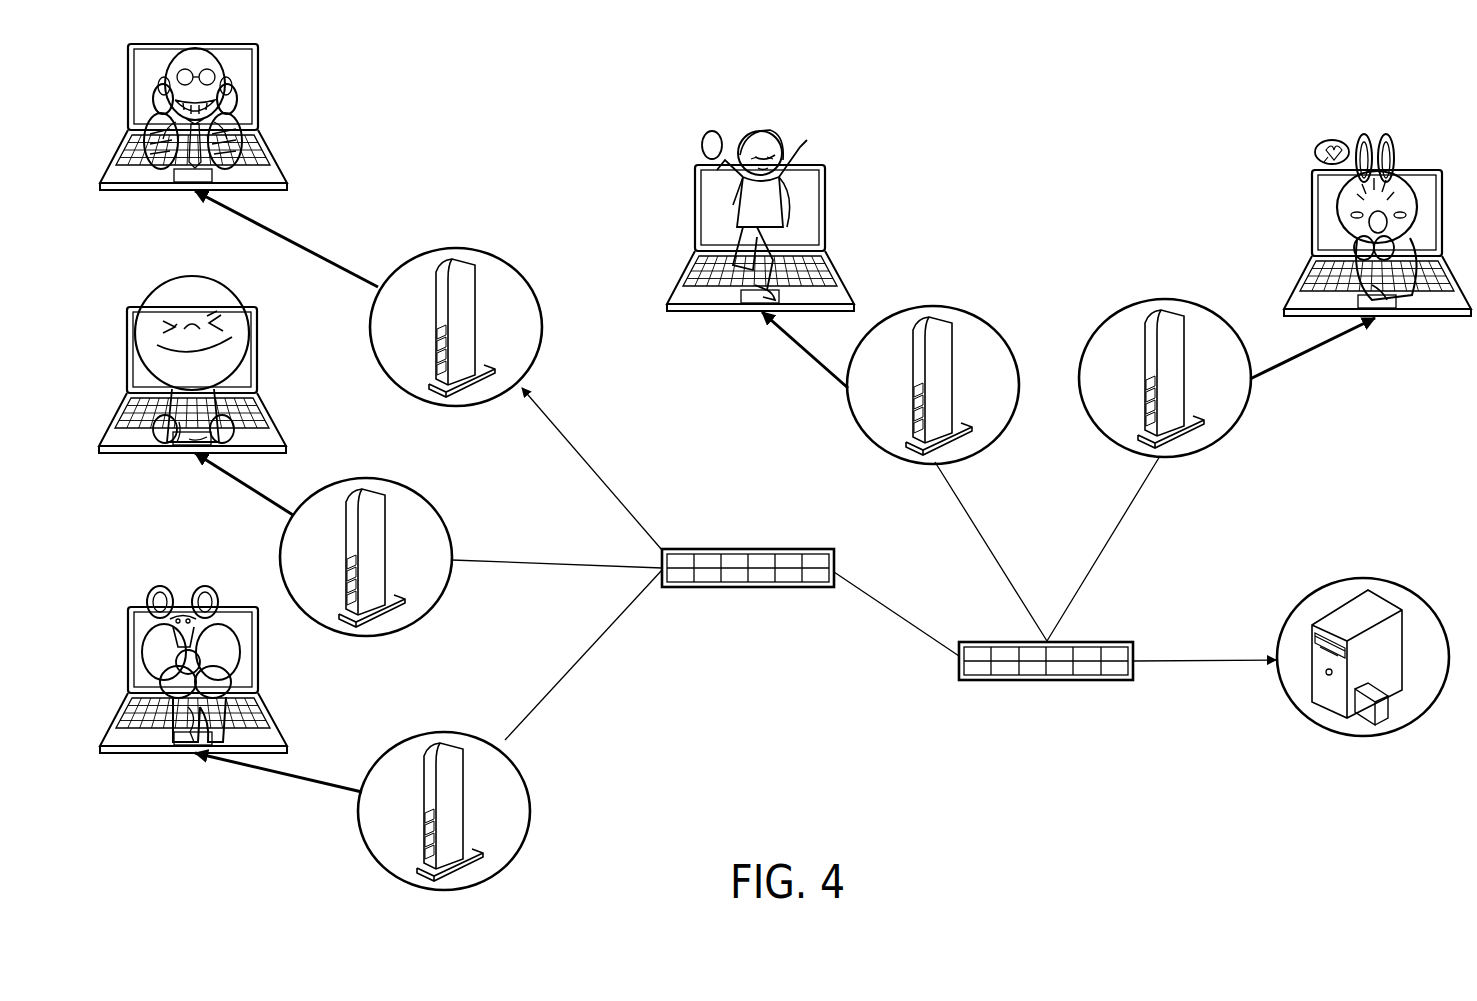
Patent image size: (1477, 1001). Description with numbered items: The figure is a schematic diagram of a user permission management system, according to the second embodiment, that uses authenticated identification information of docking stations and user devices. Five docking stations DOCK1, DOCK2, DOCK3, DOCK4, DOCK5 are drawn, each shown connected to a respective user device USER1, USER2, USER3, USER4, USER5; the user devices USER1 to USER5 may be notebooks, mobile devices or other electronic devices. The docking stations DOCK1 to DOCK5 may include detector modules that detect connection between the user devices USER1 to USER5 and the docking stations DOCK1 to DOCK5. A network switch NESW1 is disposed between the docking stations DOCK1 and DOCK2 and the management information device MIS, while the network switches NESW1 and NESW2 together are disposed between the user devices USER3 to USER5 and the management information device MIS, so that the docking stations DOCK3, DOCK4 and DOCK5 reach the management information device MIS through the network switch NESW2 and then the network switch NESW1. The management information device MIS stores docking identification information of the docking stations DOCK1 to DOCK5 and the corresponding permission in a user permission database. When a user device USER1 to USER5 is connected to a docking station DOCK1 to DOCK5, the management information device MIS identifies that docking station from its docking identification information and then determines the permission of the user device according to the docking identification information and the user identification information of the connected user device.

The user device USER1 is at (1420, 319).
The user device USER2 is at (723, 313).
The user device USER3 is at (155, 192).
The user device USER4 is at (155, 455).
The user device USER5 is at (155, 755).
The docking station DOCK1 is at (1163, 299).
The docking station DOCK2 is at (935, 305).
The docking station DOCK3 is at (455, 247).
The docking station DOCK4 is at (365, 478).
The docking station DOCK5 is at (444, 732).
The network switch NESW1 is at (1059, 681).
The network switch NESW2 is at (760, 589).
The management information device MIS is at (1365, 577).